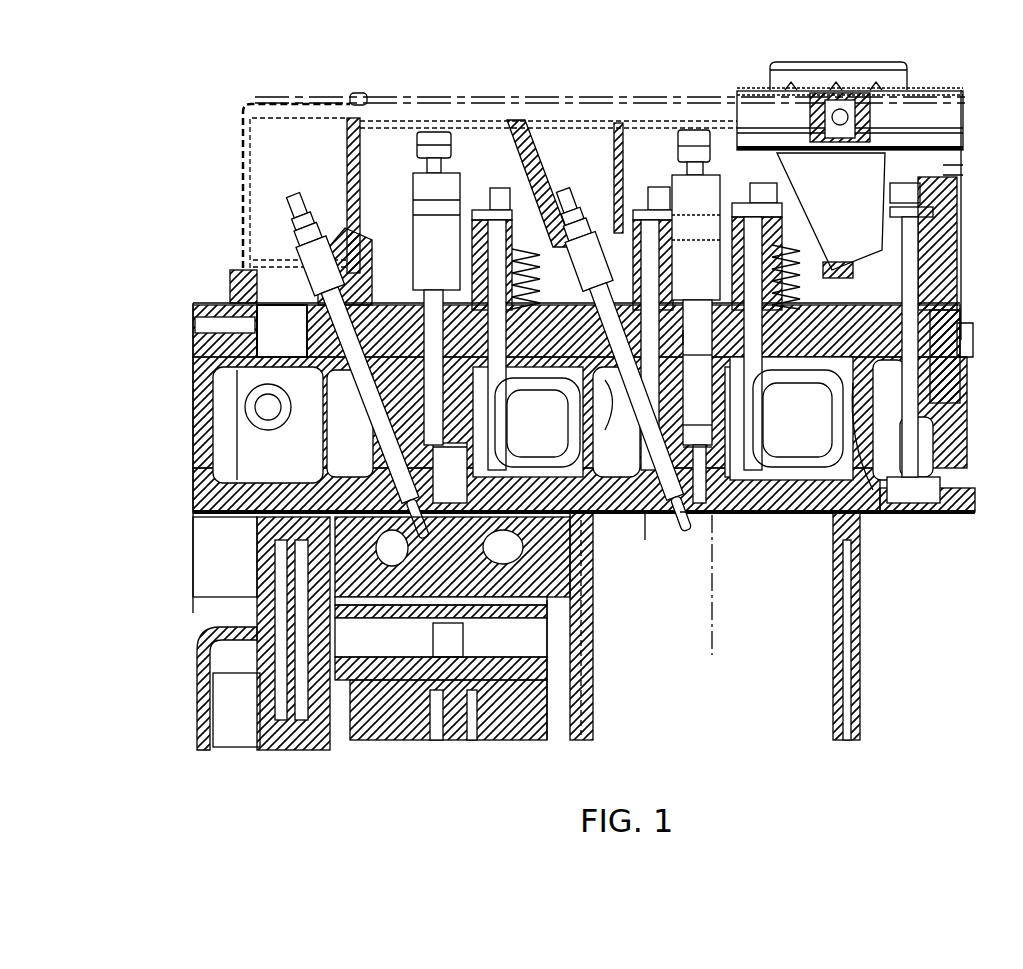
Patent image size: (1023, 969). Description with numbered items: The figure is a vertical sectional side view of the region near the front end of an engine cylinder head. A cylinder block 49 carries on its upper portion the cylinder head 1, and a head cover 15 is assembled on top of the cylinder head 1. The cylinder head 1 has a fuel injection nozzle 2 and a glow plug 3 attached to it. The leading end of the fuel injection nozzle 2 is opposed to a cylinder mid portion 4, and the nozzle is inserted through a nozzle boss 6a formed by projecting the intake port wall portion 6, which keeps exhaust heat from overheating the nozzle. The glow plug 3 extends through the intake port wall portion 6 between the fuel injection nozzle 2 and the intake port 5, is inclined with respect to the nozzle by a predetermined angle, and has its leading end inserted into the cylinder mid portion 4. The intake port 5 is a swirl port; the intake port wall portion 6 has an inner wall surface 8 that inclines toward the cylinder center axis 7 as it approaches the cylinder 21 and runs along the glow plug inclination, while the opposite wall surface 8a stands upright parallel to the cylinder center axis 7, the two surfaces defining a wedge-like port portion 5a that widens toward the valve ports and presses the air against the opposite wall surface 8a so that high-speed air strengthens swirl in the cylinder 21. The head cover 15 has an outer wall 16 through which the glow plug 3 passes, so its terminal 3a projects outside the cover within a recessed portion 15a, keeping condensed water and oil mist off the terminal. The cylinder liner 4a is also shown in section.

The cylinder head 1 is at (207, 300).
The fuel injection nozzle 2 is at (705, 170).
The glow plug 3 is at (518, 203).
The terminal 3a is at (566, 252).
The cylinder mid portion 4 is at (715, 516).
The cylinder liner 4a is at (597, 707).
The intake port 5 is at (650, 539).
The wedge-like port portion 5a is at (600, 373).
The intake port wall portion 6 is at (672, 418).
The nozzle boss 6a is at (740, 393).
The cylinder center axis 7 is at (712, 590).
The inner wall surface 8 is at (628, 403).
The opposite wall surface 8a is at (690, 335).
The head cover 15 is at (350, 192).
The recessed portion 15a is at (530, 160).
The outer wall 16 is at (663, 282).
The cylinder 21 is at (813, 680).
The cylinder block 49 is at (186, 572).